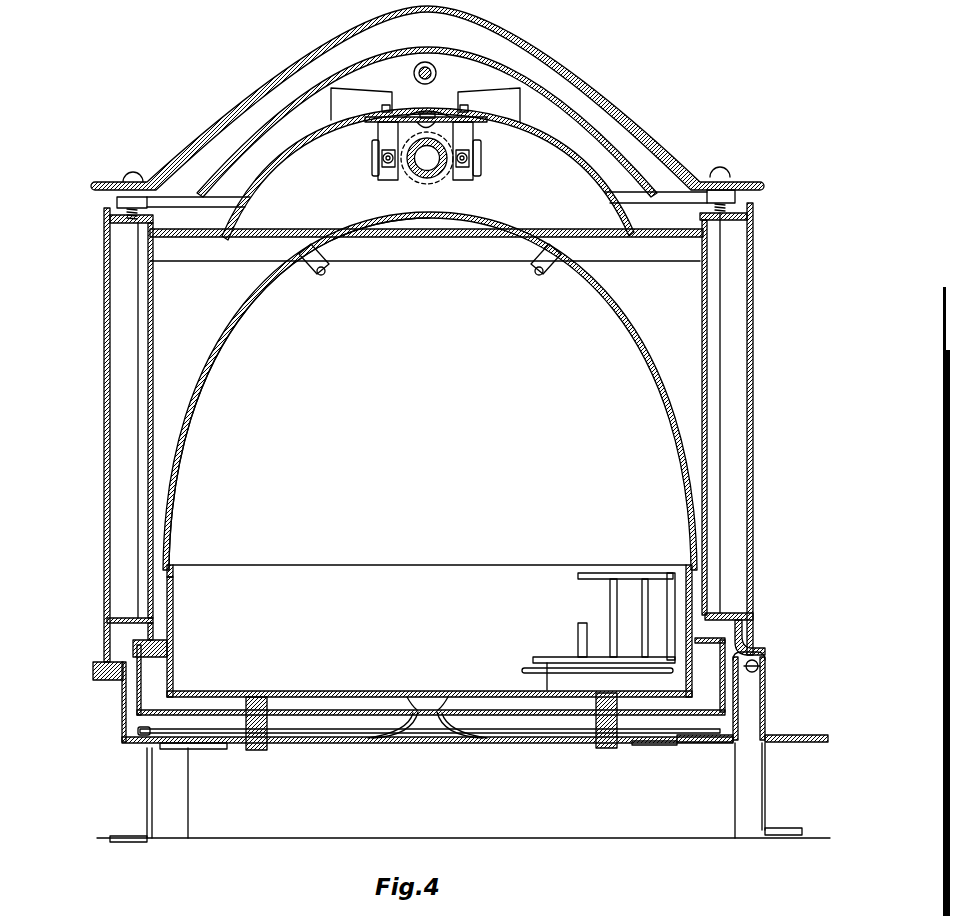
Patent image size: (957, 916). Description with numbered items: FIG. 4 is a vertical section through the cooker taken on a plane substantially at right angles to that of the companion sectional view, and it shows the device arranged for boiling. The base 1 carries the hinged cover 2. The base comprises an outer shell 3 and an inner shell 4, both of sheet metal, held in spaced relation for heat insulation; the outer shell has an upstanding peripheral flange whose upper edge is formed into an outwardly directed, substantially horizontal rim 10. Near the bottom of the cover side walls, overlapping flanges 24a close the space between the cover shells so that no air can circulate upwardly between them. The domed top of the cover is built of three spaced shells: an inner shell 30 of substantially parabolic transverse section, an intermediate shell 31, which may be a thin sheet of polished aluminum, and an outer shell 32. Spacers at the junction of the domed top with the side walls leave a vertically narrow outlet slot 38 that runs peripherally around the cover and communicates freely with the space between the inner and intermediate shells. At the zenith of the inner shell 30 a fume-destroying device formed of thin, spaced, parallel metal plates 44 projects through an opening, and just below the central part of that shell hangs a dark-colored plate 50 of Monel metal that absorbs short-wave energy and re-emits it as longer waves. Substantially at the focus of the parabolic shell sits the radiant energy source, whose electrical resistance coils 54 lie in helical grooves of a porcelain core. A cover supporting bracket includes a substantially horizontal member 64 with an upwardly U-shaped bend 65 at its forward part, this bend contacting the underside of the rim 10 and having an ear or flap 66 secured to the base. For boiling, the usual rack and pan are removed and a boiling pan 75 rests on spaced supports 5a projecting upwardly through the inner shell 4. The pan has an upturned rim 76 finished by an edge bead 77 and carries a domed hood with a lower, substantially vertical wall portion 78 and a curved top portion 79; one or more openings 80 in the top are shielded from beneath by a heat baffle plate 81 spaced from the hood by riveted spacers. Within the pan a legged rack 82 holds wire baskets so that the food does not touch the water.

The base 1 is at (102, 744).
The cover 2 is at (717, 155).
The outer shell 3 is at (310, 740).
The inner shell 4 is at (323, 707).
The spaced supports 5a is at (267, 707).
The rim 10 is at (745, 640).
The overlapping flanges 24a is at (753, 622).
The inner shell of the domed top 30 is at (306, 140).
The intermediate shell 31 is at (266, 128).
The outer shell of the domed top 32 is at (239, 109).
The outlet slot 38 is at (107, 204).
The metal plates 44 is at (520, 92).
The plate 50 is at (368, 123).
The electrical resistance coils 54 is at (433, 177).
The horizontal member 64 is at (795, 733).
The U-shaped bend 65 is at (763, 668).
The ear or flap 66 is at (703, 742).
The boiling pan 75 is at (210, 697).
The upturned rim 76 is at (173, 629).
The edge bead 77 is at (175, 573).
The wall portion 78 is at (163, 657).
The curved top portion 79 is at (197, 442).
The openings 80 is at (533, 231).
The heat baffle plate 81 is at (480, 242).
The rack 82 is at (522, 671).